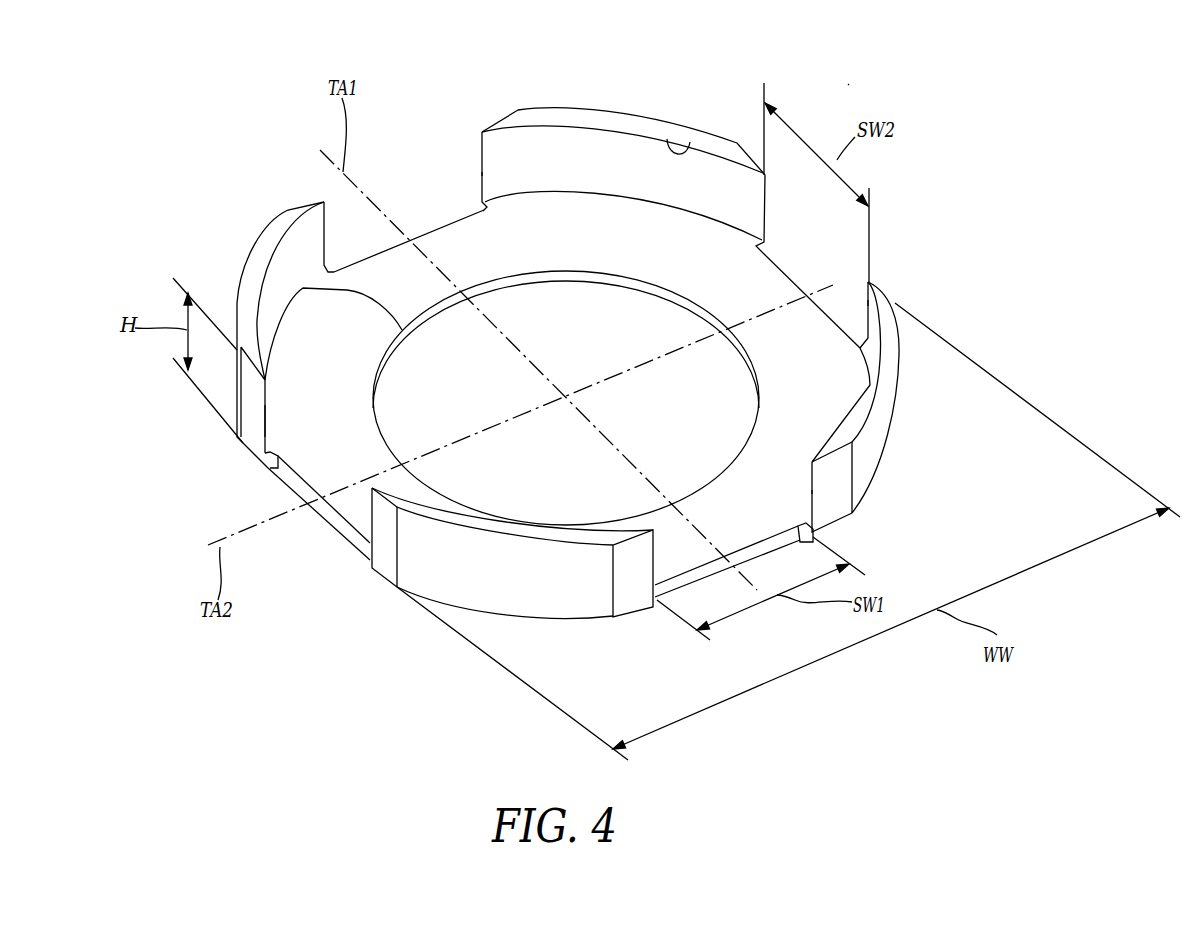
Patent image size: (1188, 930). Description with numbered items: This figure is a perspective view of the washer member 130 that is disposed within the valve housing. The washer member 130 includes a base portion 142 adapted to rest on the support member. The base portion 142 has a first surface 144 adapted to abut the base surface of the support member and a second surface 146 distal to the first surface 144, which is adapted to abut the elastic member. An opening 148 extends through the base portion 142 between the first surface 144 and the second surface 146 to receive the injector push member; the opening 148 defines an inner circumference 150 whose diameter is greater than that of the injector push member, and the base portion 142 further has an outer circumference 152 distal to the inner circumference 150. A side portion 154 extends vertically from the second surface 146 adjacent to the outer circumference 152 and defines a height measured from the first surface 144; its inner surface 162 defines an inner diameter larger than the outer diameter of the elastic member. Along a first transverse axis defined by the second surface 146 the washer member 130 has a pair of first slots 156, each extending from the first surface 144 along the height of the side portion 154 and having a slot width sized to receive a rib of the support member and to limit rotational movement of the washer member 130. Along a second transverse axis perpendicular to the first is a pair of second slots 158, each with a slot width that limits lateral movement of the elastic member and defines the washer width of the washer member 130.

The washer member 130 is at (848, 85).
The base portion 142 is at (593, 241).
The first surface 144 is at (337, 523).
The second surface 146 is at (300, 458).
The opening 148 is at (657, 337).
The inner circumference 150 is at (300, 290).
The outer circumference 152 is at (888, 462).
The side portion 154 is at (603, 108).
The first slot 156 is at (482, 172).
The second slot 158 is at (268, 405).
The inner surface 162 is at (687, 143).